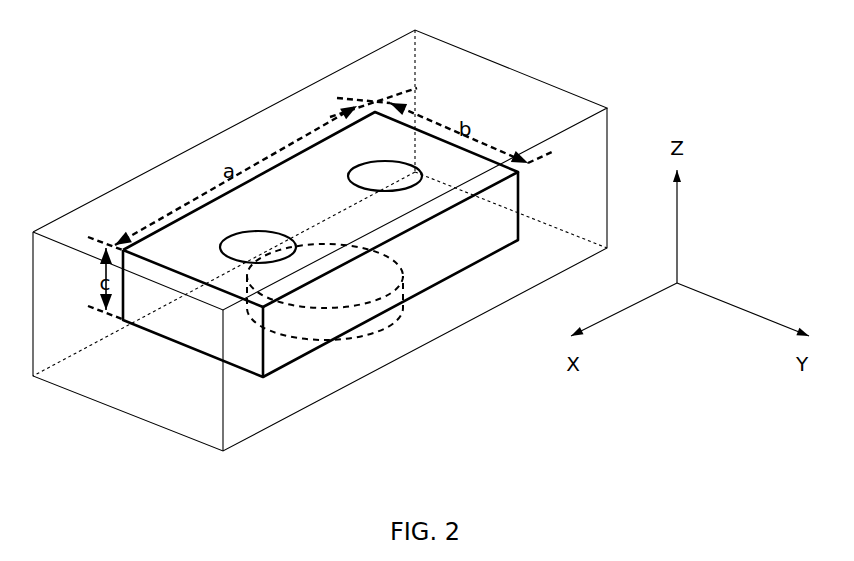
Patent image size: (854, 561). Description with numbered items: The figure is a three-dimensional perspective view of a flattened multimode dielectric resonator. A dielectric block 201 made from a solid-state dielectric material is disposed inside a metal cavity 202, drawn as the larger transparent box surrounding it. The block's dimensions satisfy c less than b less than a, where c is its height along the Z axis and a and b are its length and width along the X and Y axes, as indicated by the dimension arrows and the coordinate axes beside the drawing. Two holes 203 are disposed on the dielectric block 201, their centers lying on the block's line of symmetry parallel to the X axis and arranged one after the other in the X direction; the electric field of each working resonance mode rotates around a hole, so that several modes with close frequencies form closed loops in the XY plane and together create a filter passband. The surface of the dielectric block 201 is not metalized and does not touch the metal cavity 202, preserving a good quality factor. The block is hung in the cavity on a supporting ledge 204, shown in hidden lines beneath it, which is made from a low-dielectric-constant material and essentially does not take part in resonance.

The dielectric block 201 is at (304, 289).
The metal cavity 202 is at (320, 239).
The hole 203 is at (257, 243).
The supporting ledge 204 is at (325, 350).